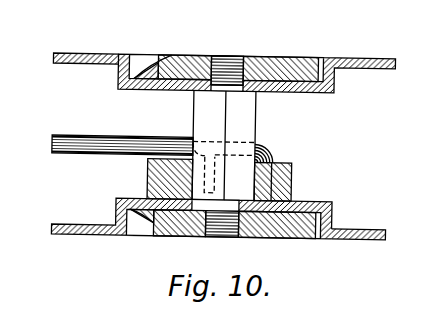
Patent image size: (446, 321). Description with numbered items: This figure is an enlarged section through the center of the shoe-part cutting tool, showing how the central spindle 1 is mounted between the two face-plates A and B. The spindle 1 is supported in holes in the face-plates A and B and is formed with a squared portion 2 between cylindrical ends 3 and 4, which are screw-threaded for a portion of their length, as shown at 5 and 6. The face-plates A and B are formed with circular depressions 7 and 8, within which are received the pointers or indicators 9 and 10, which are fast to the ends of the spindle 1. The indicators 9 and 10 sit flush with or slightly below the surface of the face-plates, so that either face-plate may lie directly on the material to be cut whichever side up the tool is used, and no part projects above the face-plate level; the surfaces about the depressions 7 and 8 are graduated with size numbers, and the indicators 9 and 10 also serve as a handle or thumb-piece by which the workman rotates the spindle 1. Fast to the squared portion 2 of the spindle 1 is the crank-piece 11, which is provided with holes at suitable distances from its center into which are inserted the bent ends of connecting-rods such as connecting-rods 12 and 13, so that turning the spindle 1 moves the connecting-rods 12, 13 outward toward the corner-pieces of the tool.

The face-plate A is at (87, 52).
The face-plate B is at (379, 229).
The spindle 1 is at (218, 54).
The squared portion 2 is at (210, 113).
The cylindrical end 3 is at (231, 86).
The cylindrical end 4 is at (218, 206).
The screw-threaded portion 5 is at (232, 65).
The screw-threaded portion 6 is at (219, 230).
The circular depression 7 is at (138, 61).
The circular depression 8 is at (138, 229).
The pointer or indicator 9 is at (299, 61).
The pointer or indicator 10 is at (291, 237).
The crank-piece 11 is at (294, 180).
The connecting-rod 12 is at (274, 151).
The connecting-rod 13 is at (72, 136).